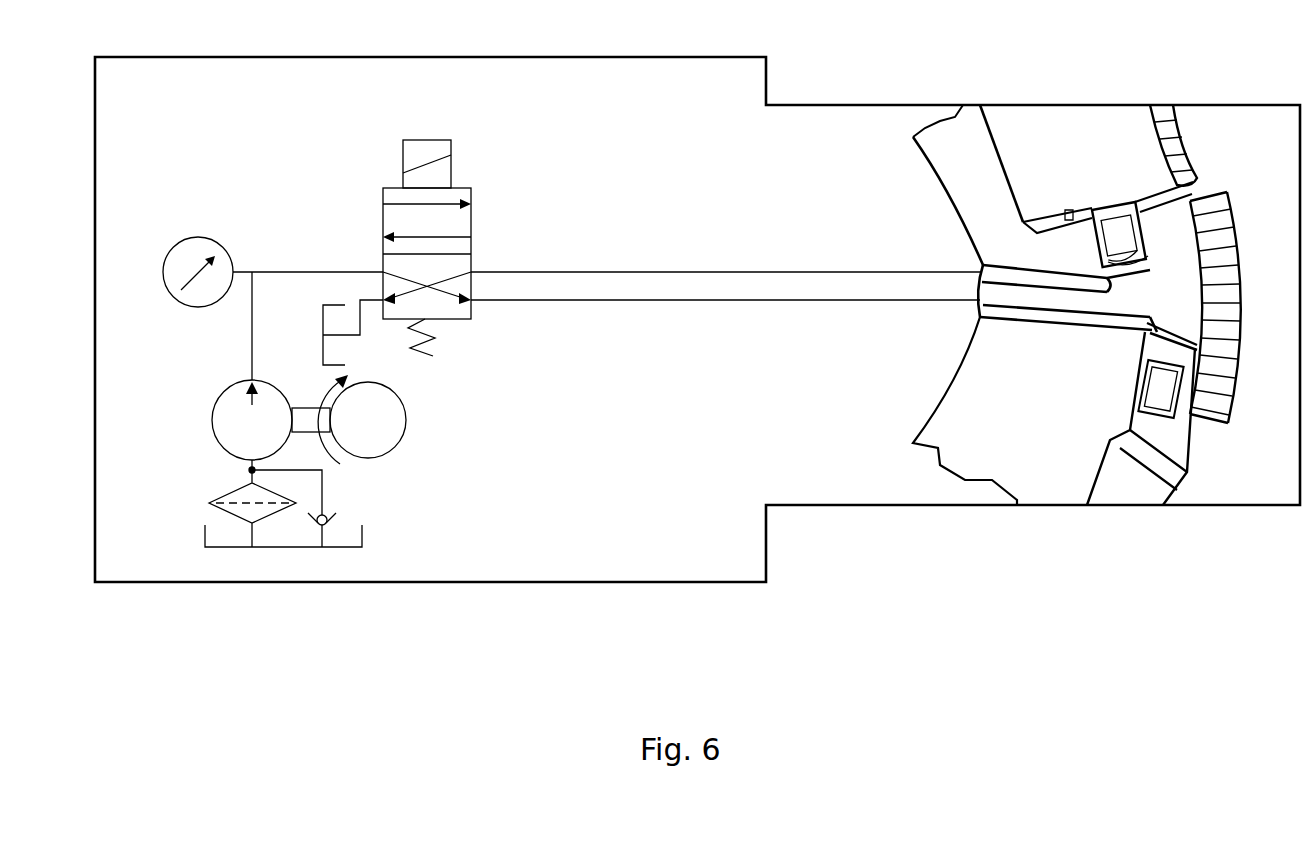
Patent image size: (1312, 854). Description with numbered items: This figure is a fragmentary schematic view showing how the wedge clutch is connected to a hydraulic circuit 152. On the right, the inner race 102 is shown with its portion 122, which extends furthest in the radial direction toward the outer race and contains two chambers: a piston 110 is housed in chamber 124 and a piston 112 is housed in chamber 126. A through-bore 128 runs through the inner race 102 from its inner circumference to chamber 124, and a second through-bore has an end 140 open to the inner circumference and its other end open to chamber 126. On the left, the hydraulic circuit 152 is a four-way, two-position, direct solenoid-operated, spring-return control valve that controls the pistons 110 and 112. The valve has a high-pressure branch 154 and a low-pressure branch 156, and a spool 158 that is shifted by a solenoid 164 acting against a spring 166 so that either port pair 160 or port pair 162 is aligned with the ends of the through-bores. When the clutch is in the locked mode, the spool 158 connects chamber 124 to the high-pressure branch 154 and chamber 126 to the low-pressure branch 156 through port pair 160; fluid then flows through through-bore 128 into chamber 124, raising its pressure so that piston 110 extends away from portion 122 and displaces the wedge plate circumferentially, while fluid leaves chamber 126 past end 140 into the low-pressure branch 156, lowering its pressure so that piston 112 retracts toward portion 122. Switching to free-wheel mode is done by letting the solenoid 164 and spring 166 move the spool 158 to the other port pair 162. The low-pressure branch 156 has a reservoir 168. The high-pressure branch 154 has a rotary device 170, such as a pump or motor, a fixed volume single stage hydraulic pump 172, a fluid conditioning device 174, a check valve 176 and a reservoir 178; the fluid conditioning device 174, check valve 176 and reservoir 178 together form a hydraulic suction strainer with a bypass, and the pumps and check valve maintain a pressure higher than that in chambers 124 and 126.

The hydraulic circuit 152 is at (206, 114).
The high-pressure branch 154 is at (262, 234).
The low-pressure branch 156 is at (365, 347).
The spool 158 is at (475, 198).
The port pair 160 is at (432, 208).
The port pair 162 is at (428, 284).
The solenoid 164 is at (432, 140).
The spring 166 is at (423, 352).
The reservoir 168 is at (323, 347).
The rotary device 170 is at (213, 305).
The fixed volume single stage hydraulic pump 172 is at (212, 424).
The fluid conditioning device 174 is at (230, 490).
The check valve 176 is at (336, 518).
The reservoir 178 is at (300, 548).
The inner race 102 is at (978, 400).
The piston 110 is at (1108, 212).
The piston 112 is at (1135, 432).
The portion 122 is at (1170, 225).
The chamber 124 is at (1127, 280).
The chamber 126 is at (1135, 345).
The through-bore 128 is at (1008, 272).
The end 140 is at (1008, 307).